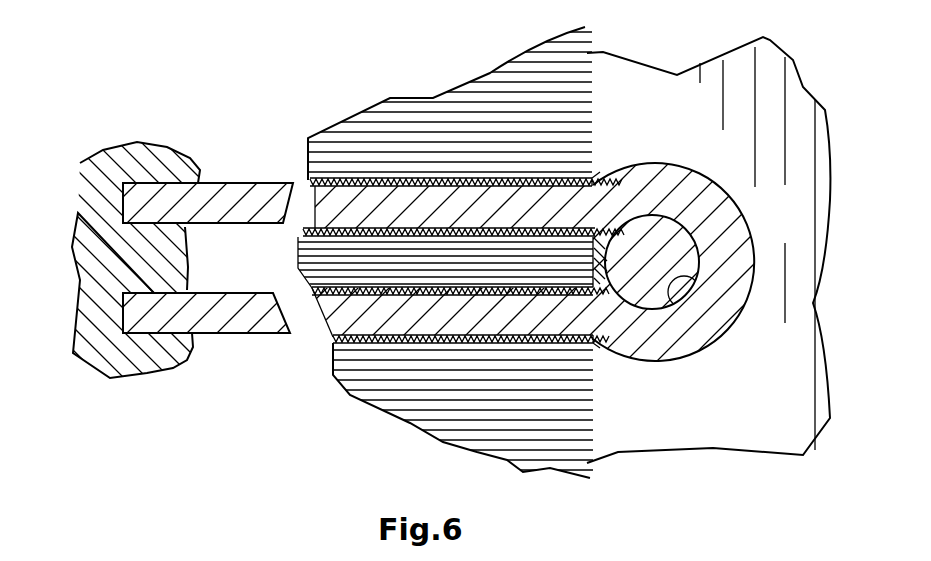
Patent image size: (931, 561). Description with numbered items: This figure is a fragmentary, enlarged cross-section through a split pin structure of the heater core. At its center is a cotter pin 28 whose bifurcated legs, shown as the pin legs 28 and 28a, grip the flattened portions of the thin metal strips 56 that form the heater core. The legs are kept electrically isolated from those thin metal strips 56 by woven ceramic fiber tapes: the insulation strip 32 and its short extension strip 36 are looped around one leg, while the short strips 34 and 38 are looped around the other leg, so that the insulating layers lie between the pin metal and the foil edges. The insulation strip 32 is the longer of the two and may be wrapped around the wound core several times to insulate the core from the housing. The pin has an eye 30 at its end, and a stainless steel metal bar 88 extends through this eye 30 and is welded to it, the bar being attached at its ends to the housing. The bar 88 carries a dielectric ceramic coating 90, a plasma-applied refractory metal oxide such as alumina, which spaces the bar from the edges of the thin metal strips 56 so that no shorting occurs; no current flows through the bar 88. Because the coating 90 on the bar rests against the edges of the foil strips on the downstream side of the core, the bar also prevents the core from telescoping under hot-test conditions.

The cotter pin 28 is at (232, 205).
The bifurcated leg 28a is at (233, 323).
The eye 30 is at (716, 281).
The insulation strip 32 is at (317, 217).
The insulation strip 34 is at (390, 290).
The short strip 36 is at (355, 182).
The short strip 38 is at (407, 340).
The thin metal strips 56 is at (318, 265).
The metal bar 88 is at (668, 247).
The dielectric ceramic coating 90 is at (652, 217).